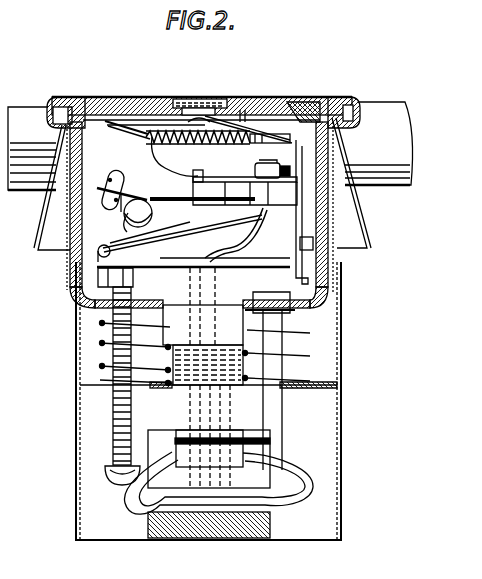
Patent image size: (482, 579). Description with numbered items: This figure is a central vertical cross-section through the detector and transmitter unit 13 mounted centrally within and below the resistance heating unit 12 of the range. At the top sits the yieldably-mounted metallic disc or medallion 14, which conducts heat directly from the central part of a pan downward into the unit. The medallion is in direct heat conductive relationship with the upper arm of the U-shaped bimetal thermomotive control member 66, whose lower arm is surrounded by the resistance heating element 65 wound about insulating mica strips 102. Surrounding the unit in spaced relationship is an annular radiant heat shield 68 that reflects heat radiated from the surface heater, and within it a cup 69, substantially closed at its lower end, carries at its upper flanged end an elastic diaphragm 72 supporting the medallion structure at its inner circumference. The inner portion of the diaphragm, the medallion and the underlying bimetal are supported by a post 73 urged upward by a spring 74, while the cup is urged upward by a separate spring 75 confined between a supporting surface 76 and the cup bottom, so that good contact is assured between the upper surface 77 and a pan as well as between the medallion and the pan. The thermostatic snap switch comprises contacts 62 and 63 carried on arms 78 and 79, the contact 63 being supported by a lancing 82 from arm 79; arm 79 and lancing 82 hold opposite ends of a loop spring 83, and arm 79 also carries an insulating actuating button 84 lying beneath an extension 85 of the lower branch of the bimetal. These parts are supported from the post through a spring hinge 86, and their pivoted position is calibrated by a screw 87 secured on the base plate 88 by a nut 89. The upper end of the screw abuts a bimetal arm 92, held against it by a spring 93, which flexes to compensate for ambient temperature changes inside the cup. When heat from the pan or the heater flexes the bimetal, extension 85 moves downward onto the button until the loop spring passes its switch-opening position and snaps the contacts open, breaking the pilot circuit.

The heating unit 12 is at (19, 106).
The detector and transmitter unit 13 is at (353, 100).
The metallic disc 14 is at (232, 97).
The switch contact 62 is at (181, 218).
The switch contact 63 is at (165, 192).
The resistance heating element 65 is at (218, 150).
The bimetal thermomotive control member 66 is at (292, 138).
The annular radiant heat shield 68 is at (72, 283).
The cup 69 is at (333, 278).
The elastic diaphragm 72 is at (102, 103).
The post 73 is at (182, 410).
The spring 74 is at (170, 350).
The spring 75 is at (308, 353).
The supporting surface 76 is at (325, 386).
The upper surface 77 is at (332, 95).
The arm 78 is at (230, 213).
The arm 79 is at (125, 190).
The lancing 82 is at (138, 213).
The loop spring 83 is at (126, 222).
The actuating button 84 is at (105, 180).
The extension 85 is at (123, 130).
The spring hinge 86 is at (278, 170).
The screw 87 is at (115, 423).
The base plate 88 is at (292, 274).
The nut 89 is at (133, 288).
The bimetal arm 92 is at (113, 249).
The spring 93 is at (163, 258).
The mica strips 102 is at (148, 137).